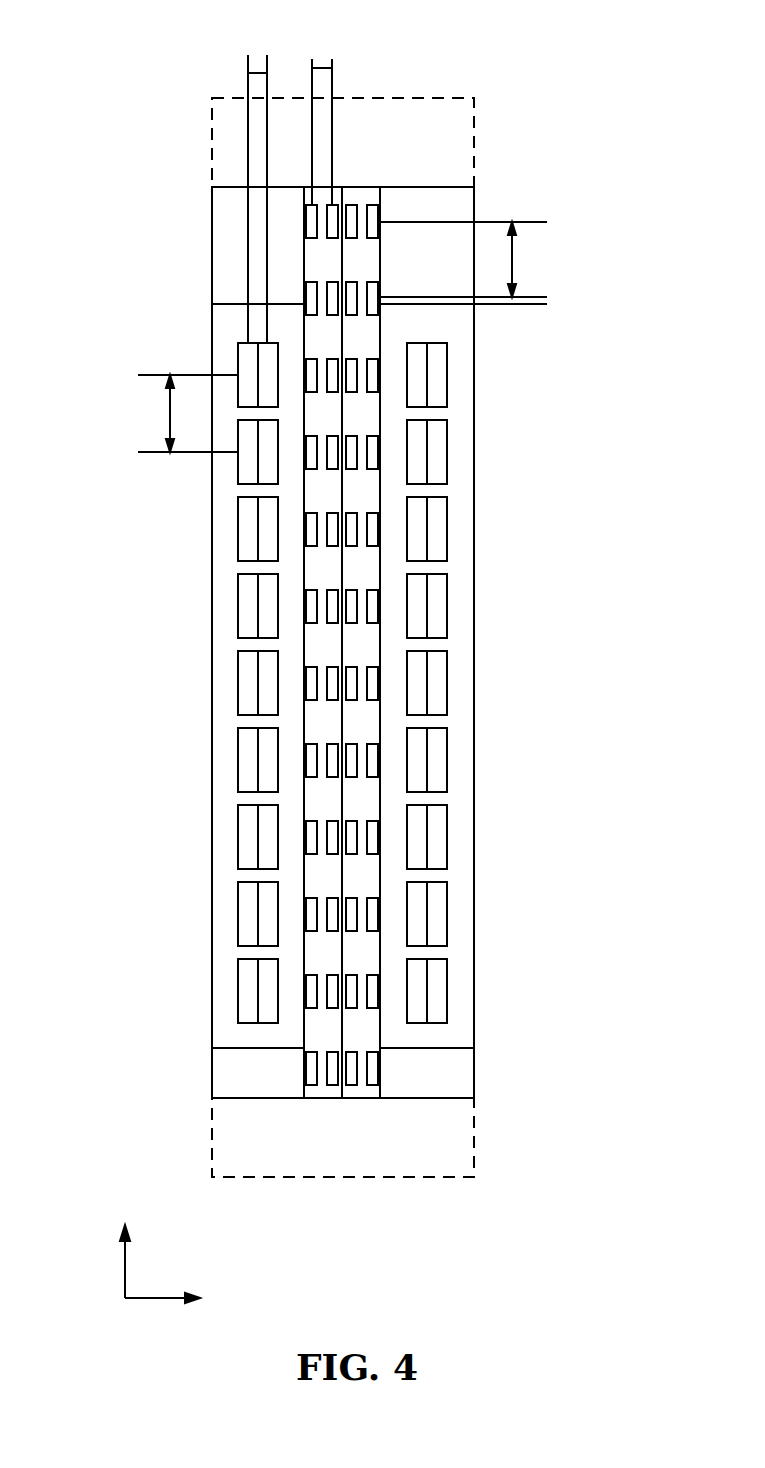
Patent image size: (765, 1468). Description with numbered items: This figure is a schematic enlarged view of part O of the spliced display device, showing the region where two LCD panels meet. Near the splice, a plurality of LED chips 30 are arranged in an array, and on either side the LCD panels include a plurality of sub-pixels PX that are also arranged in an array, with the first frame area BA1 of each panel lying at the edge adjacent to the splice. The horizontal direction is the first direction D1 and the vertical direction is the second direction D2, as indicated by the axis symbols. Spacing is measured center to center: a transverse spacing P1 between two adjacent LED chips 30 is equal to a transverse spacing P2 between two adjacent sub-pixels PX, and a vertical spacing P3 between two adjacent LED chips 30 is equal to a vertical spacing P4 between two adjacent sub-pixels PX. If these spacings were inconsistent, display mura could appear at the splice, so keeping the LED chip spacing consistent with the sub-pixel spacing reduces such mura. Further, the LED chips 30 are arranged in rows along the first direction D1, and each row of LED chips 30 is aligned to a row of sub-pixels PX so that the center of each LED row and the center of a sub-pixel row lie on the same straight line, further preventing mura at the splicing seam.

The part O is at (214, 97).
The transverse spacing between two adjacent LED chips P1 is at (326, 109).
The transverse spacing between two adjacent sub-pixels P2 is at (257, 178).
The vertical spacing between two adjacent LED chips P3 is at (526, 259).
The vertical spacing between two adjacent sub-pixels P4 is at (183, 413).
The sub-pixel PX is at (248, 358).
The LED chip 30 is at (350, 211).
The first frame area BA1 is at (313, 1028).
The first direction D1 is at (178, 1299).
The second direction D2 is at (124, 1247).